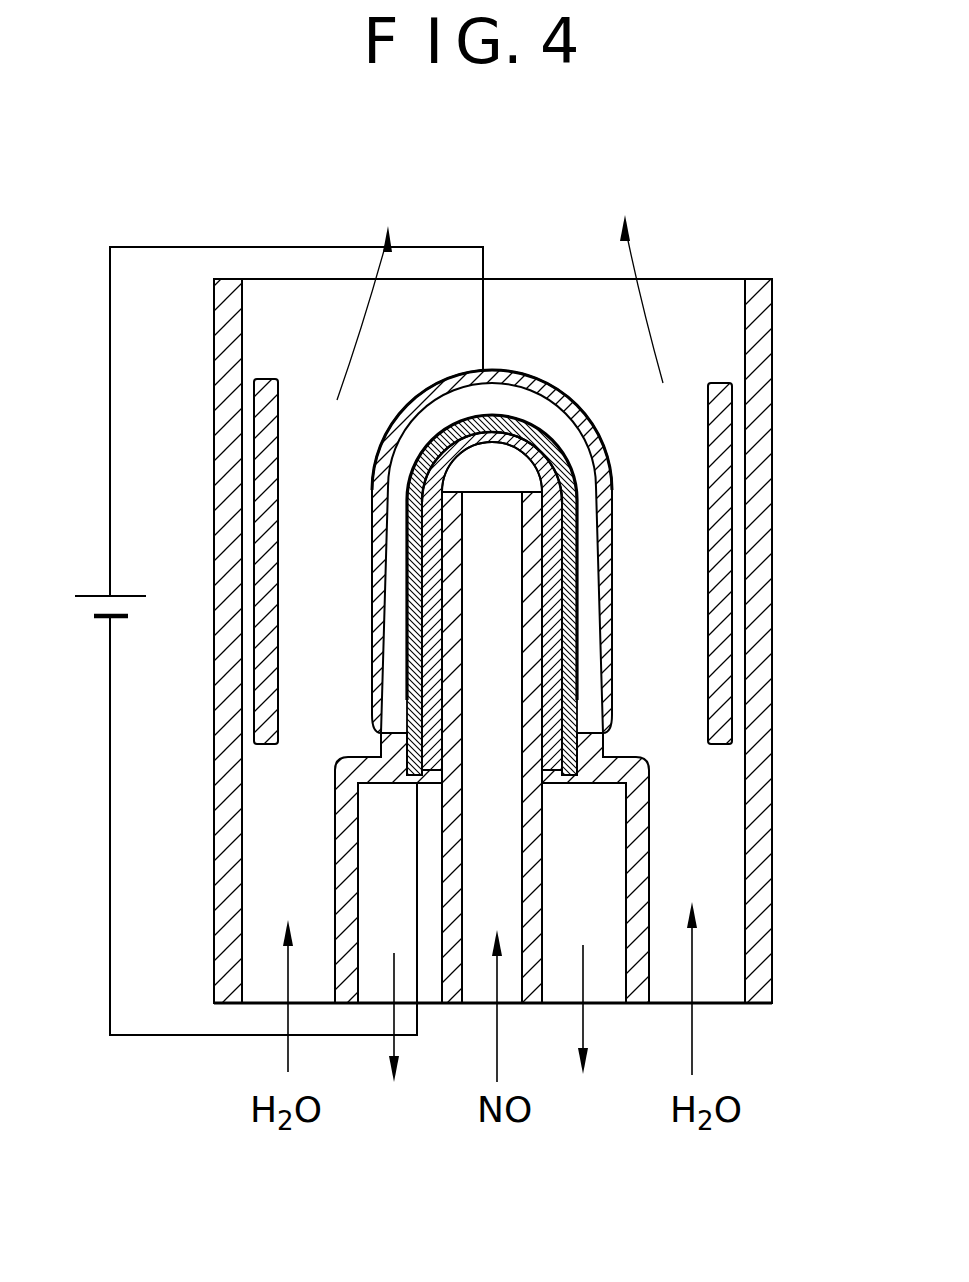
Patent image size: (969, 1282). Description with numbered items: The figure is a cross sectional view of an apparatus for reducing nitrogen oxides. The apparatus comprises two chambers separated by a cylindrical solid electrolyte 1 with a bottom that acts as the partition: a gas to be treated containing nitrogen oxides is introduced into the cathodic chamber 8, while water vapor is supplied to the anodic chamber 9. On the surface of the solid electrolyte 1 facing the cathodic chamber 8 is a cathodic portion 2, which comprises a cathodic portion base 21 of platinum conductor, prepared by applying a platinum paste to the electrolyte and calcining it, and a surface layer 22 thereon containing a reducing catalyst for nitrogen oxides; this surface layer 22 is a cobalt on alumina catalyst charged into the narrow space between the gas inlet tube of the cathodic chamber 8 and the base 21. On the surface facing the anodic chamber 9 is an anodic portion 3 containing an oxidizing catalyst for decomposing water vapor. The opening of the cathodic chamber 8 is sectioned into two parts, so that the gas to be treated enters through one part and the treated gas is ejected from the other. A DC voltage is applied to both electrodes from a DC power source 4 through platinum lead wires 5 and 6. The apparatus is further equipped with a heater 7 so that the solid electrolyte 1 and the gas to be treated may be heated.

The solid electrolyte 1 is at (592, 588).
The cathodic portion 2 is at (582, 540).
The anodic portion 3 is at (614, 648).
The DC power source 4 is at (114, 619).
The platinum lead wire 5 is at (110, 893).
The platinum lead wire 6 is at (455, 247).
The heater 7 is at (718, 440).
The cathodic chamber 8 is at (503, 485).
The anodic chamber 9 is at (340, 556).
The cathodic portion base 21 is at (548, 438).
The surface layer 22 is at (520, 424).